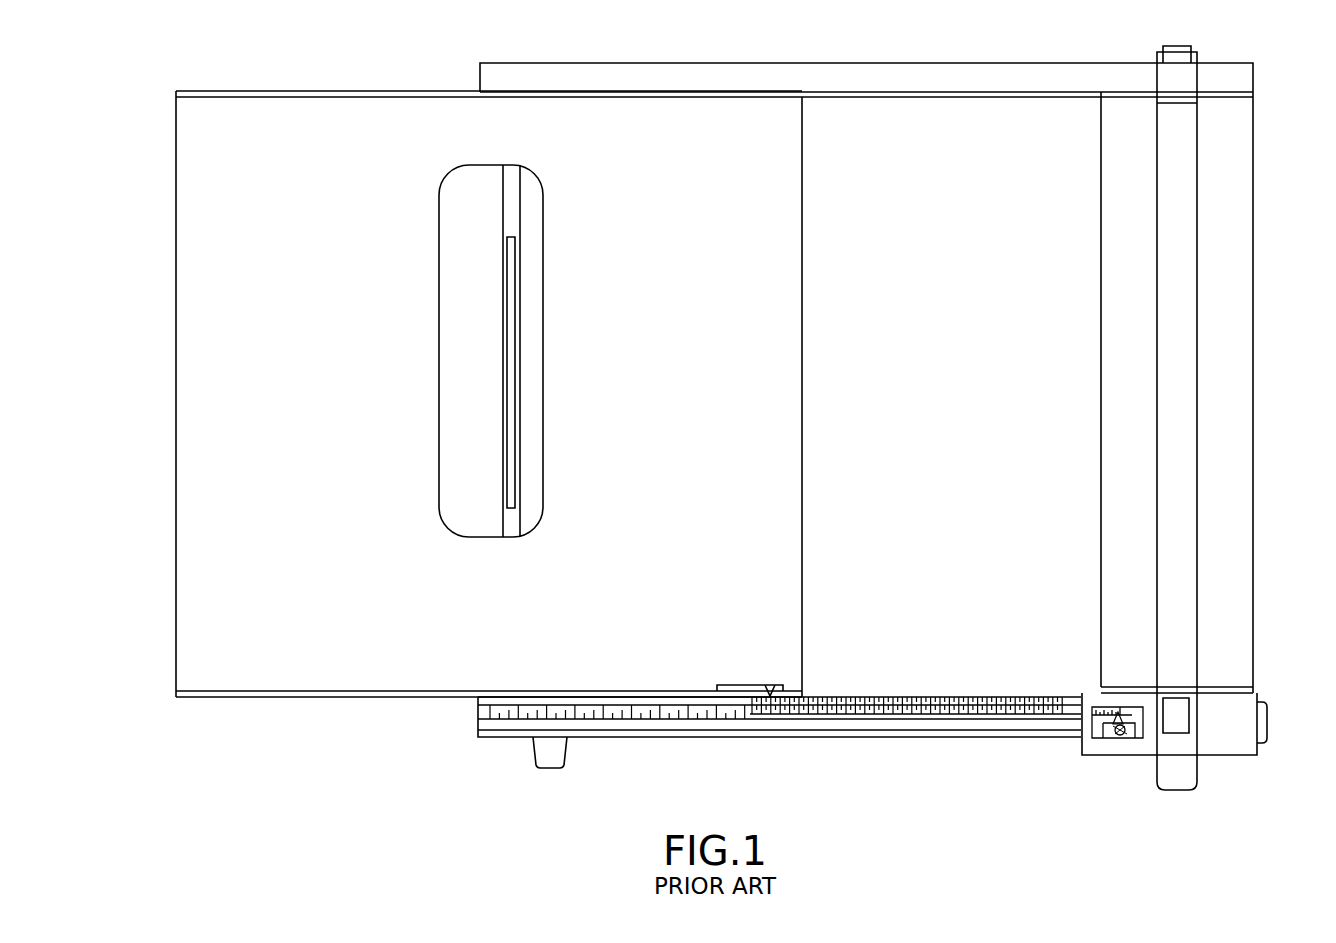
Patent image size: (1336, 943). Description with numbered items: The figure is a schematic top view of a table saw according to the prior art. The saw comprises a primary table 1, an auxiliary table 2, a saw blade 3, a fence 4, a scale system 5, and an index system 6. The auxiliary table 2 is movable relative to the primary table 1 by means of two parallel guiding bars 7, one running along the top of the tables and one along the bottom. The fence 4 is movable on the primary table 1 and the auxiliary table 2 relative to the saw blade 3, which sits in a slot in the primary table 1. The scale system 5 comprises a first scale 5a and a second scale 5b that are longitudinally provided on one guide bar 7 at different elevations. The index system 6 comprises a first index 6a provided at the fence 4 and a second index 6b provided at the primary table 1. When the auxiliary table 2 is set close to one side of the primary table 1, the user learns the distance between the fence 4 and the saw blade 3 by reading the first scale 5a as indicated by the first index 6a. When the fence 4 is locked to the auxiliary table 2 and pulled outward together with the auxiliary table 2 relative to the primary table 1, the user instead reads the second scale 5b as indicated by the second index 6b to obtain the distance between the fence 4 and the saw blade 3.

The primary table 1 is at (252, 117).
The auxiliary table 2 is at (1239, 396).
The saw blade 3 is at (512, 280).
The fence 4 is at (1183, 193).
The scale system 5 is at (1027, 808).
The first scale 5a is at (917, 715).
The second scale 5b is at (962, 700).
The index system 6 is at (1133, 738).
The first index 6a is at (1118, 727).
The second index 6b is at (772, 697).
The guiding bars 7 is at (848, 72).